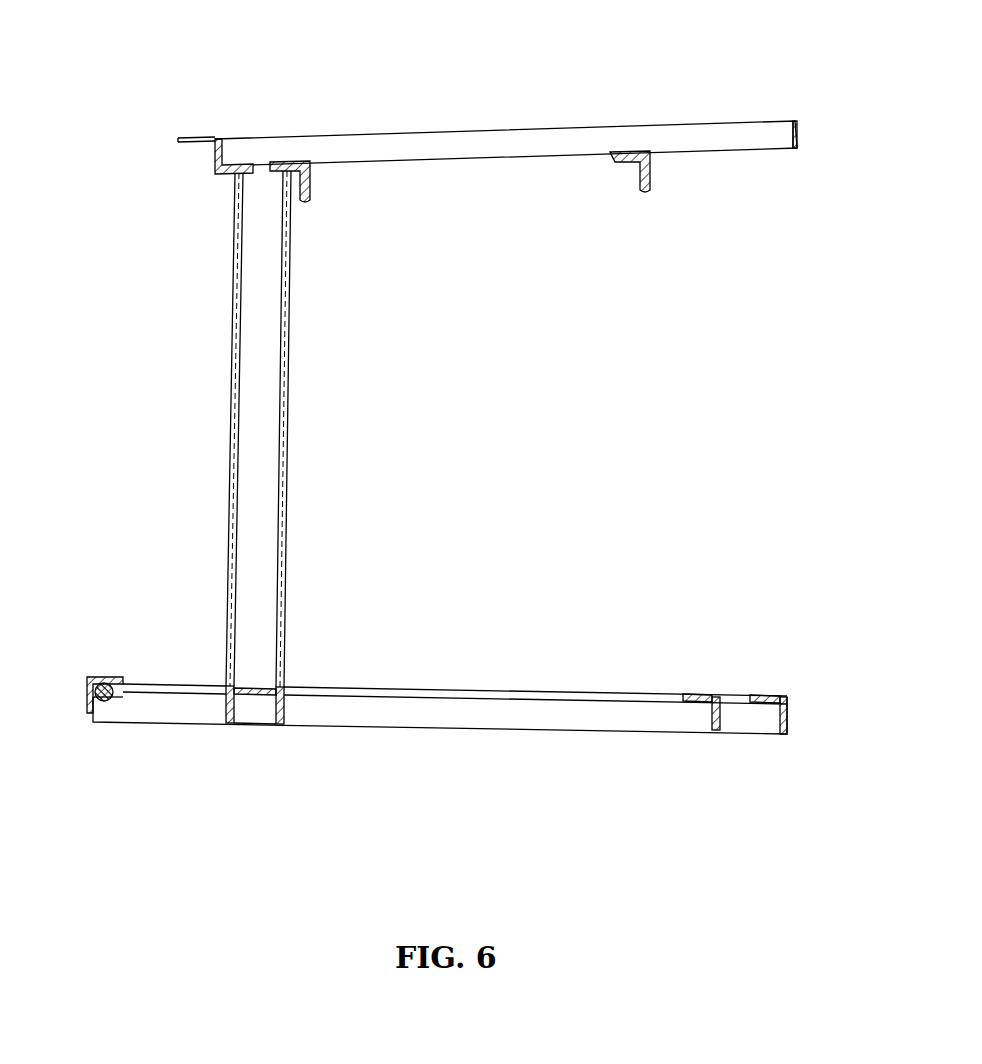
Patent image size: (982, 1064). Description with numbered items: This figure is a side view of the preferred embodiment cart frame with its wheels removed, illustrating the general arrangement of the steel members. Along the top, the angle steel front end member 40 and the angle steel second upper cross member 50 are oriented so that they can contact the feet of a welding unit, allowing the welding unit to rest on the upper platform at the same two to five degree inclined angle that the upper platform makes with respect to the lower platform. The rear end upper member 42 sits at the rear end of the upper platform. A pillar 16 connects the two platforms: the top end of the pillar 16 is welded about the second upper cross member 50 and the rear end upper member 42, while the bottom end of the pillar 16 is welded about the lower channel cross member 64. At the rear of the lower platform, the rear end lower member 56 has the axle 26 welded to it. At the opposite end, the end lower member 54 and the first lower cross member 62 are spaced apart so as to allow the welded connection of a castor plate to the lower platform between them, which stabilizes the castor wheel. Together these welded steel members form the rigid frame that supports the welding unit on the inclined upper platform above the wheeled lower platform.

The pillar 16 is at (287, 425).
The axle 26 is at (111, 714).
The angle steel front end member 40 is at (656, 160).
The rear end upper member 42 is at (220, 138).
The angle steel second upper cross member 50 is at (322, 162).
The end lower member 54 is at (788, 697).
The rear end lower member 56 is at (108, 684).
The first lower cross member 62 is at (693, 697).
The lower channel cross member 64 is at (281, 712).